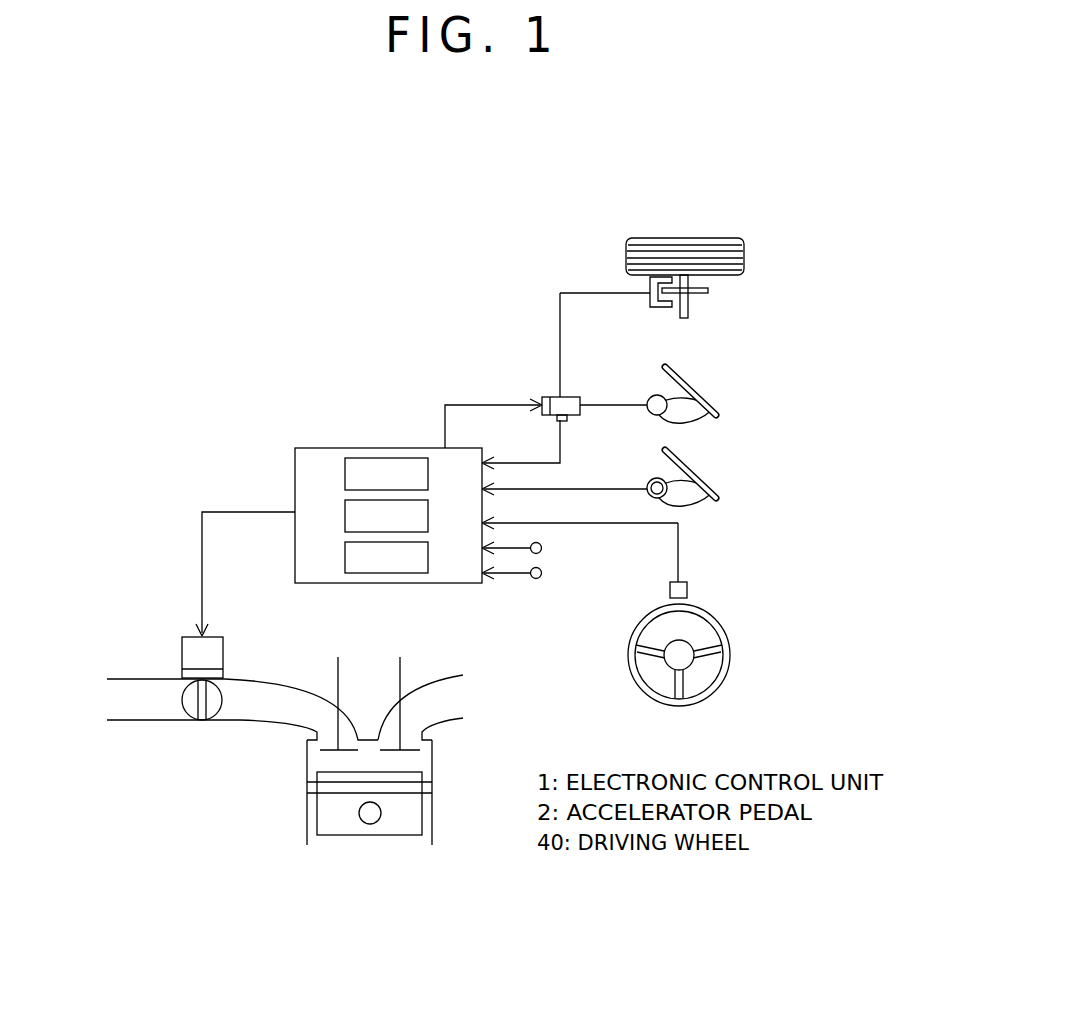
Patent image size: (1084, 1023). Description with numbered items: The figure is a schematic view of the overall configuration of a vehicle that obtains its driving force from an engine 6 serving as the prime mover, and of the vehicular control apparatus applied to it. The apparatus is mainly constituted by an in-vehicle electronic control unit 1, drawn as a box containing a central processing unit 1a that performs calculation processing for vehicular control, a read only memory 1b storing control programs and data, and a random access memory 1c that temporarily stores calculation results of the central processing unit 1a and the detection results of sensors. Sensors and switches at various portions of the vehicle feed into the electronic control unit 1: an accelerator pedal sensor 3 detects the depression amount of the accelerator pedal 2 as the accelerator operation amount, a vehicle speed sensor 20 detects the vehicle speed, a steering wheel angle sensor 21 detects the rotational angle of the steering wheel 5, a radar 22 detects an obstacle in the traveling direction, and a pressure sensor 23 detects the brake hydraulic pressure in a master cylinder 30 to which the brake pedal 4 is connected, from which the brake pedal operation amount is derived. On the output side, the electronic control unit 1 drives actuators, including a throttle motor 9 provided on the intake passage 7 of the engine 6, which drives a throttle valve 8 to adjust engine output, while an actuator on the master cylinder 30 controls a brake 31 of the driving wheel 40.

The electronic control unit 1 is at (333, 444).
The central processing unit 1a is at (428, 472).
The read only memory 1b is at (428, 516).
The random access memory 1c is at (428, 557).
The accelerator pedal 2 is at (701, 472).
The accelerator pedal sensor 3 is at (648, 480).
The brake pedal 4 is at (716, 400).
The steering wheel 5 is at (730, 657).
The engine 6 is at (433, 812).
The intake passage 7 is at (233, 721).
The throttle valve 8 is at (223, 698).
The throttle motor 9 is at (224, 650).
The vehicle speed sensor 20 is at (543, 548).
The steering wheel angle sensor 21 is at (688, 590).
The radar 22 is at (543, 573).
The pressure sensor 23 is at (568, 419).
The master cylinder 30 is at (566, 393).
The brake 31 is at (661, 308).
The driving wheel 40 is at (745, 257).